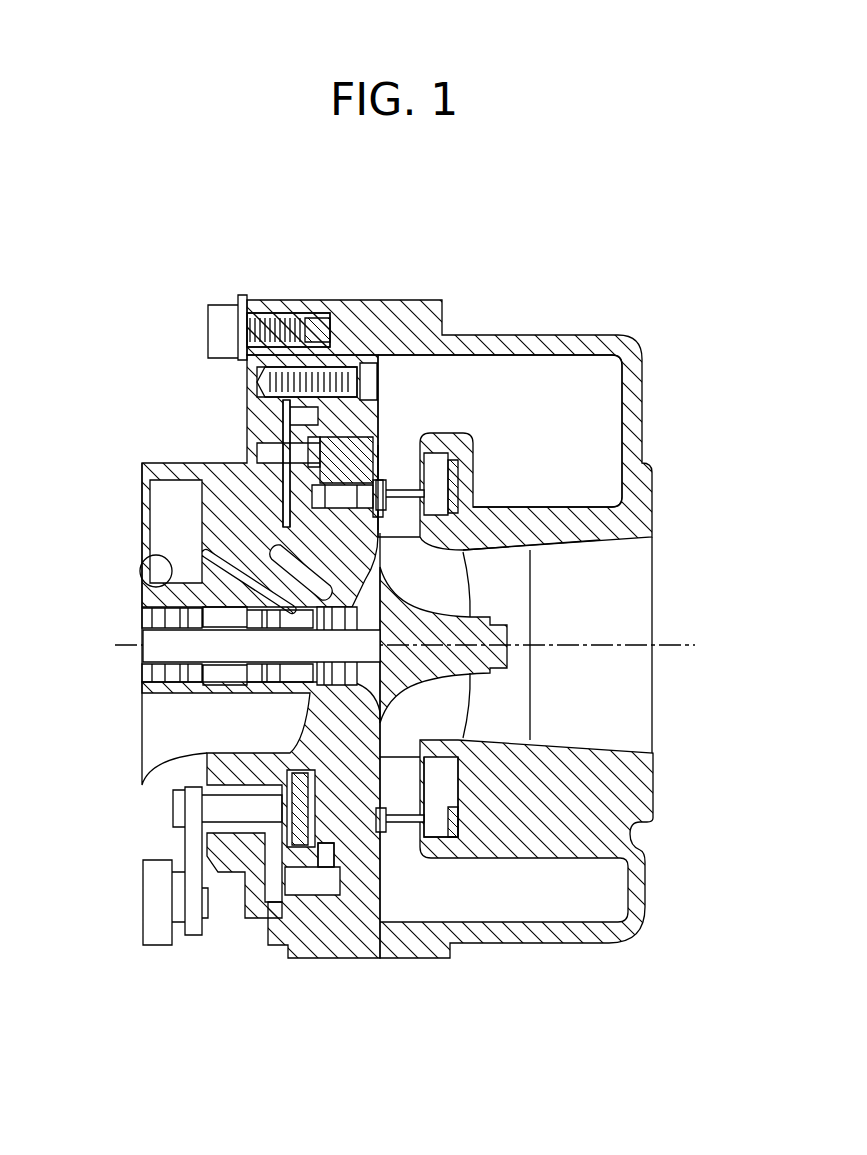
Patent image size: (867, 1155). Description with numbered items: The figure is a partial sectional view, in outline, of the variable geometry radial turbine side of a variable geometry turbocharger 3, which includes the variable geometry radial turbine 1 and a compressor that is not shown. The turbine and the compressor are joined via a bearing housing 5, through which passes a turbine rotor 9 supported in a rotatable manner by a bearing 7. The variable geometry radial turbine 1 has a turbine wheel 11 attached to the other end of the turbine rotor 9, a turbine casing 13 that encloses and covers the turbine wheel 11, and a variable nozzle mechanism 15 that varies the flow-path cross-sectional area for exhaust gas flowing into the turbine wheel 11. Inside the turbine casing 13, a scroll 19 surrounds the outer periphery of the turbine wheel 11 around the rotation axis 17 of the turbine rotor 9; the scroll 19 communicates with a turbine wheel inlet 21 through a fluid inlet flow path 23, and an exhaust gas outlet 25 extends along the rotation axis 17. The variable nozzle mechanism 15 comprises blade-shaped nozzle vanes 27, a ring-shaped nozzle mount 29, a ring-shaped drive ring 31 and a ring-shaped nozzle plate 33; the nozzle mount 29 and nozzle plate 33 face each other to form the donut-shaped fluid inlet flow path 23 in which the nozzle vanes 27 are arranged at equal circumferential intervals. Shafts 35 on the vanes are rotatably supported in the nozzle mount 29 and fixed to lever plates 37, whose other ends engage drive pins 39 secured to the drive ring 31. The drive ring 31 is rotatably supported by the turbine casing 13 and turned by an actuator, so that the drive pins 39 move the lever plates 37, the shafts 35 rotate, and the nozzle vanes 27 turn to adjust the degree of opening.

The variable geometry radial turbine 1 is at (402, 585).
The variable geometry turbocharger 3 is at (233, 595).
The bearing housing 5 is at (228, 480).
The bearing 7 is at (255, 676).
The turbine rotor 9 is at (226, 665).
The turbine wheel 11 is at (458, 588).
The turbine casing 13 is at (428, 300).
The variable nozzle mechanism 15 is at (403, 432).
The rotation axis 17 is at (640, 650).
The scroll 19 is at (600, 407).
The turbine wheel inlet 21 is at (400, 530).
The fluid inlet flow path 23 is at (388, 462).
The exhaust gas outlet 25 is at (618, 716).
The nozzle vane 27 is at (397, 492).
The nozzle mount 29 is at (393, 816).
The drive ring 31 is at (330, 850).
The nozzle plate 33 is at (420, 778).
The shaft 35 is at (340, 505).
The lever plate 37 is at (283, 472).
The drive pin 39 is at (297, 416).